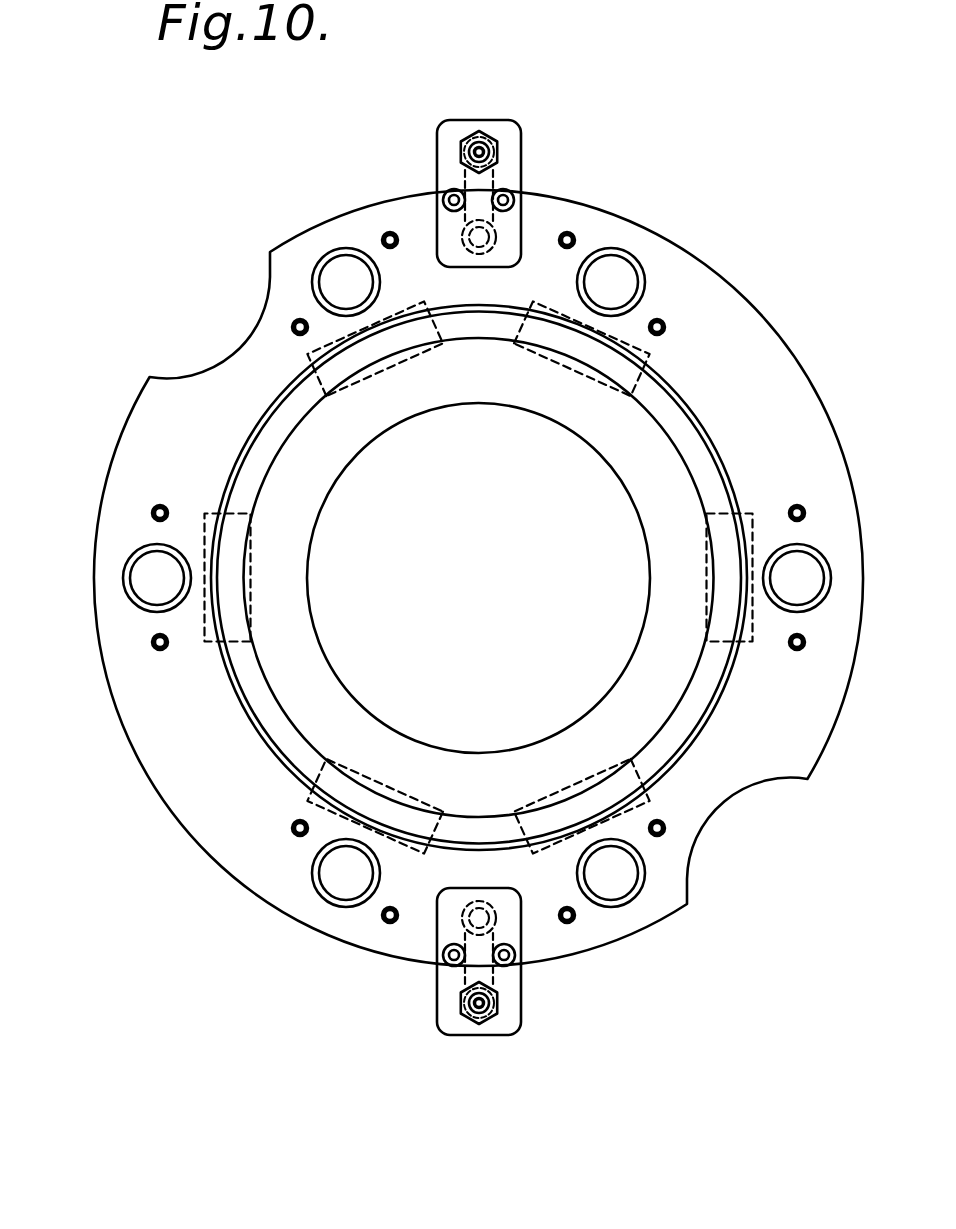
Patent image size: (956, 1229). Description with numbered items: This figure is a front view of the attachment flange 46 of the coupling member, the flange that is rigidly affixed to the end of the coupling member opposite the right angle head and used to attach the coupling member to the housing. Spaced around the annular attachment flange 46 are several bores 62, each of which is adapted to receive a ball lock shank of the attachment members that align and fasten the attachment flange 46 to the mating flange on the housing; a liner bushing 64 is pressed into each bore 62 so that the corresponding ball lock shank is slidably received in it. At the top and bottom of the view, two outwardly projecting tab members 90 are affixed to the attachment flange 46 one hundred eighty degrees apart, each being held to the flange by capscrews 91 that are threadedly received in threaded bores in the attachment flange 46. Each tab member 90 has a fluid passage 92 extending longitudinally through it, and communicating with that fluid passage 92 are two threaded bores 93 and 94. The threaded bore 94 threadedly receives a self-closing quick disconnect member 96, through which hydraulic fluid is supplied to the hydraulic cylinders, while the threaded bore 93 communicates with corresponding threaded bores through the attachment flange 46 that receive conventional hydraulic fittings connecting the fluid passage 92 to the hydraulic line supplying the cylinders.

The attachment flange 46 is at (225, 788).
The bore 62 is at (135, 590).
The liner bushing 64 is at (141, 552).
The tab member 90 is at (510, 138).
The capscrew 91 is at (452, 190).
The fluid passage 92 is at (504, 194).
The threaded bore 93 is at (465, 228).
The threaded bore 94 is at (484, 138).
The self-closing quick disconnect member 96 is at (471, 582).